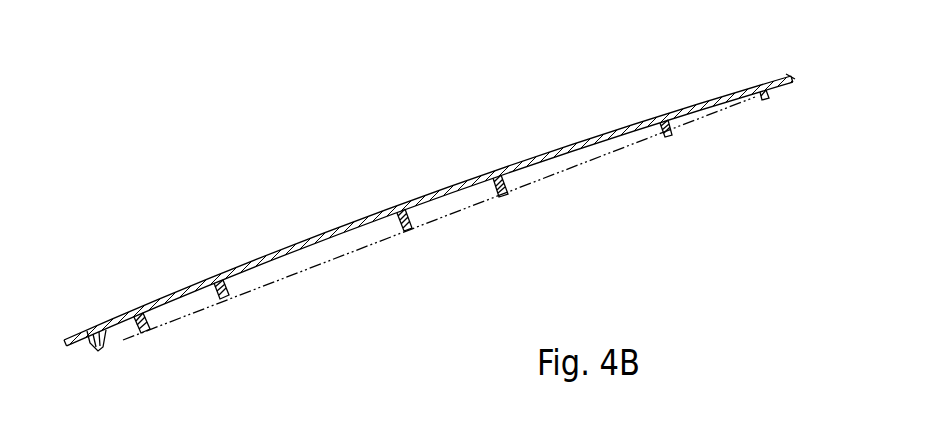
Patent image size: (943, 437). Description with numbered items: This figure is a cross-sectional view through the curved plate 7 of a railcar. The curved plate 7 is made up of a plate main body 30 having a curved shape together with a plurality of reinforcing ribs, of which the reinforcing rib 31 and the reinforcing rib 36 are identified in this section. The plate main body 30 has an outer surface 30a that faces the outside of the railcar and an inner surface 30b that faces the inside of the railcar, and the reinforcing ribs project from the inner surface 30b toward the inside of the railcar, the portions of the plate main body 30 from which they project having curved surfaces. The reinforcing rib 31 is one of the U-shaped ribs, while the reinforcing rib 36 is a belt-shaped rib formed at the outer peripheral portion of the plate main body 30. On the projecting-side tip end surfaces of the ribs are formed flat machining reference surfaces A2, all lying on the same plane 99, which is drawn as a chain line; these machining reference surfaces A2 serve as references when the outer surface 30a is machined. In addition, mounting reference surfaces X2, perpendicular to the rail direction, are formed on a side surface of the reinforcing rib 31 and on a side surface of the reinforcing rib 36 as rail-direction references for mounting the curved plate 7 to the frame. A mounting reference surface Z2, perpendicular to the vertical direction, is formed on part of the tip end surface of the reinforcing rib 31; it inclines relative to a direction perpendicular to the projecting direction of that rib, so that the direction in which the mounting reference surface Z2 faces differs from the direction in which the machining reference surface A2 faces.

The curved plate 7 is at (473, 134).
The plate main body 30 is at (333, 227).
The outer surface 30a is at (271, 251).
The inner surface 30b is at (288, 256).
The reinforcing rib 31 is at (208, 297).
The reinforcing rib 36 is at (123, 341).
The plane 99 is at (574, 168).
The machining reference surface A2 is at (141, 331).
The mounting reference surface X2 is at (148, 318).
The mounting reference surface Z2 is at (226, 302).